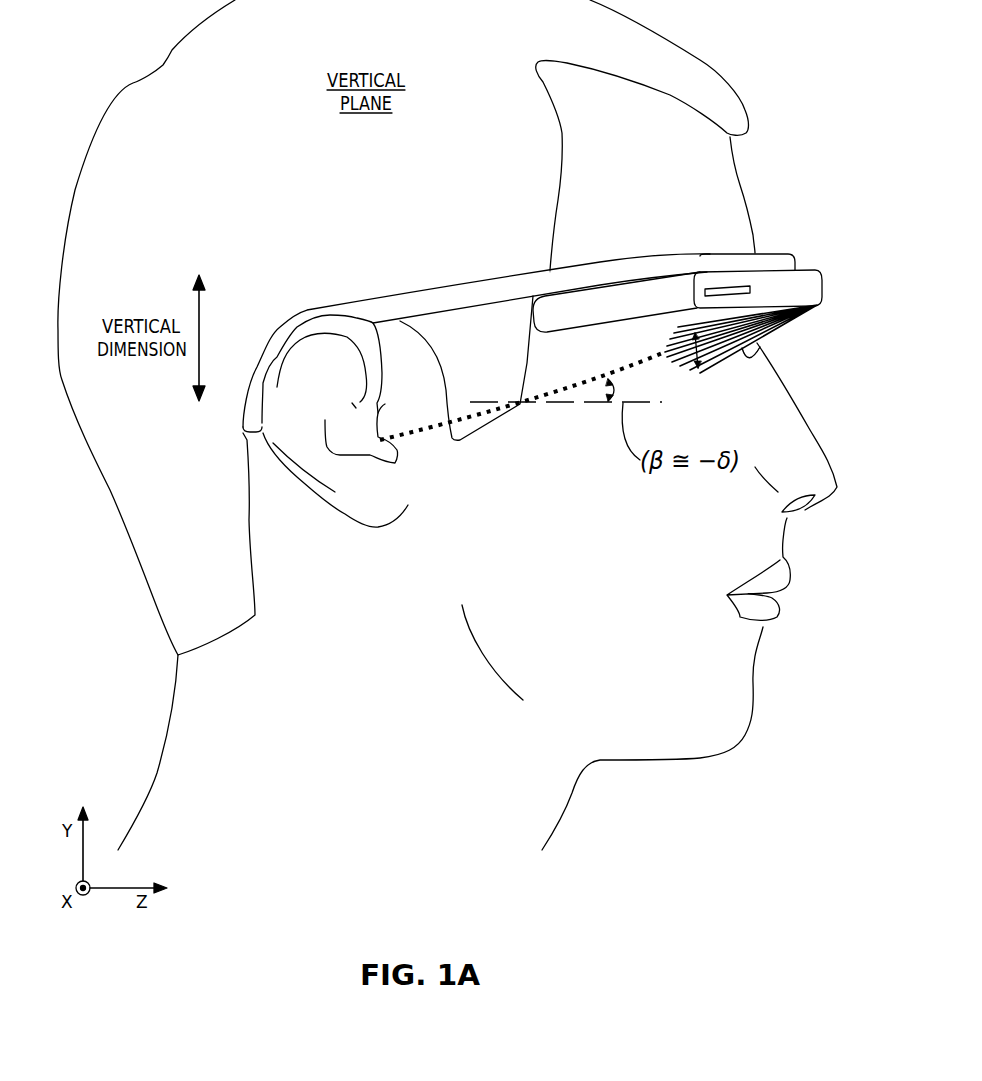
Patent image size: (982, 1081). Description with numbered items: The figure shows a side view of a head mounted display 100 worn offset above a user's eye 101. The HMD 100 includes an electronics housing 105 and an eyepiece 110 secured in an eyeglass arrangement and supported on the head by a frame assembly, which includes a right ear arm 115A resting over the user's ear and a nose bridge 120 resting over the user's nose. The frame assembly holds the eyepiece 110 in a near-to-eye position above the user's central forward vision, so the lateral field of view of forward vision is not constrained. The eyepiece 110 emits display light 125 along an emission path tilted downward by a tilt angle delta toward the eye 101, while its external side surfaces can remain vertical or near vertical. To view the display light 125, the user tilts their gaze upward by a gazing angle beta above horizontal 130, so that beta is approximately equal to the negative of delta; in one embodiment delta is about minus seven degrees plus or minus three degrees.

The head mounted display 100 is at (788, 212).
The eyepiece 110 is at (827, 271).
The right ear arm 115A is at (455, 291).
The electronics housing 105 is at (612, 315).
The display light 125 is at (783, 328).
The nose bridge 120 is at (763, 366).
The eye 101 is at (684, 358).
The horizontal 130 is at (586, 404).